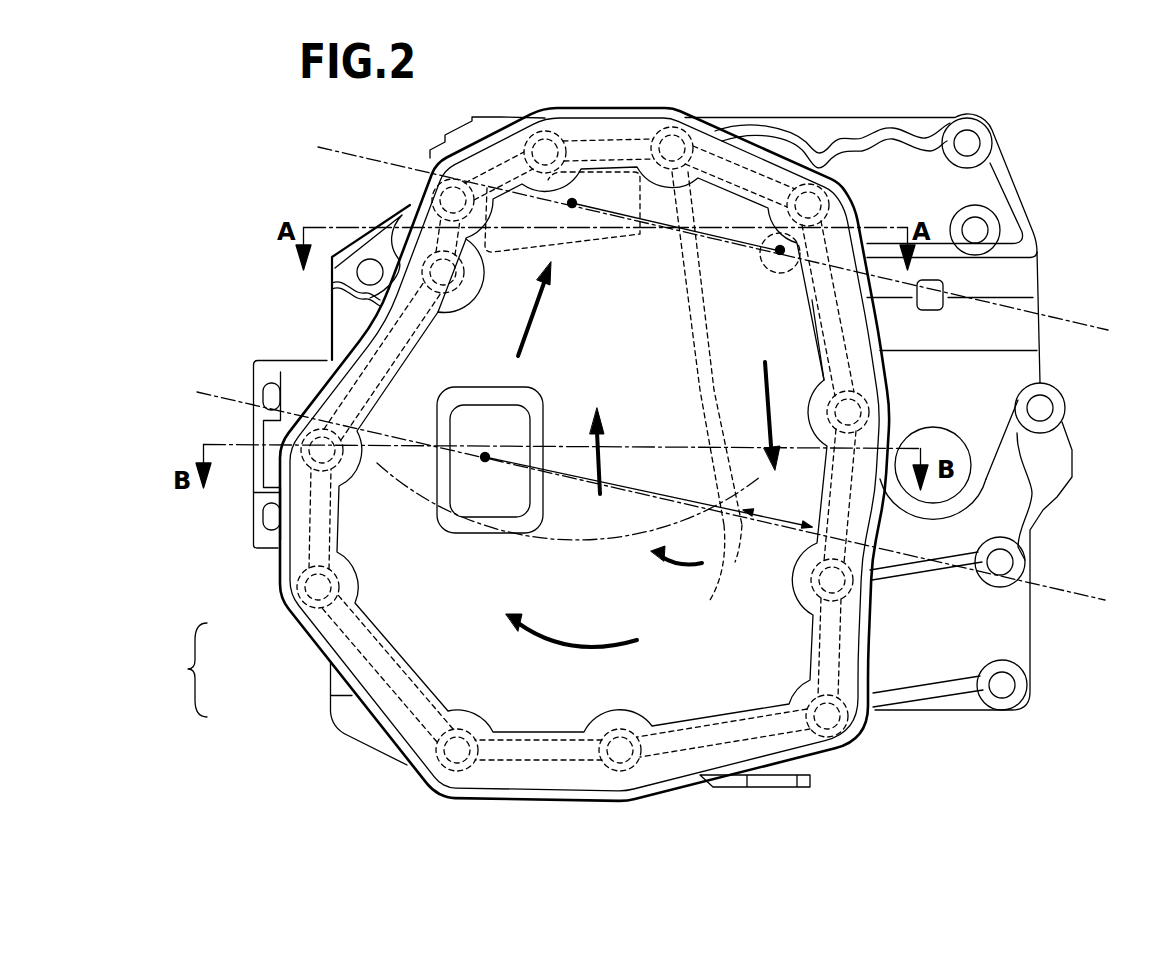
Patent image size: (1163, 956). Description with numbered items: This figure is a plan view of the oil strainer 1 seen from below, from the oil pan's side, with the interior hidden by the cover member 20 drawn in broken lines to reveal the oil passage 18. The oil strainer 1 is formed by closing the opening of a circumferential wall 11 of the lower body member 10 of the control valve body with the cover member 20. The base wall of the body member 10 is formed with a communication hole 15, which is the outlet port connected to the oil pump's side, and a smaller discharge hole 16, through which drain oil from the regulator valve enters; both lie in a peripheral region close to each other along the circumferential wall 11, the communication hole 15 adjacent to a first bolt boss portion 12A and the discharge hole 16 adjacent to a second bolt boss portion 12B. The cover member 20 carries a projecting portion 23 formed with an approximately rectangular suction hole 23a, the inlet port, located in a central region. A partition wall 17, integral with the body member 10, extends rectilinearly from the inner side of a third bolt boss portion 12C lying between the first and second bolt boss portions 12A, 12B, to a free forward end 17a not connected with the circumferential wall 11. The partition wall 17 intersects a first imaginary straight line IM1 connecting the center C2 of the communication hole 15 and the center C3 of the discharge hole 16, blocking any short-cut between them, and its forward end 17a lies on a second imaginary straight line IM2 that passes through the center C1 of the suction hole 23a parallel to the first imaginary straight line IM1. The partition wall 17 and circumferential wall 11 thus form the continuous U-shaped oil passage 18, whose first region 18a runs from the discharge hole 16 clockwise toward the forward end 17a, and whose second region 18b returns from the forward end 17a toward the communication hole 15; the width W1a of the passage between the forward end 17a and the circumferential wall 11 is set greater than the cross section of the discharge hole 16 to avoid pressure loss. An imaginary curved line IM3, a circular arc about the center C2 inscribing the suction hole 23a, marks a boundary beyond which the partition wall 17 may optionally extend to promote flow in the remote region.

The oil strainer 1 is at (187, 670).
The body member 10 is at (948, 719).
The circumferential wall 11 is at (347, 617).
The first bolt boss portion 12A is at (557, 135).
The second bolt boss portion 12B is at (820, 190).
The third bolt boss portion 12C is at (655, 132).
The communication hole 15 is at (612, 222).
The discharge hole 16 is at (787, 274).
The partition wall 17 is at (700, 408).
The forward end 17a is at (714, 578).
The oil passage 18 is at (707, 670).
The first region 18a is at (792, 372).
The second region 18b is at (485, 353).
The cover member 20 is at (303, 658).
The projecting portion 23 is at (300, 418).
The suction hole 23a is at (445, 483).
The center of suction hole C1 is at (485, 463).
The center of communication hole C2 is at (575, 208).
The center of discharge hole C3 is at (776, 254).
The first imaginary straight line IM1 is at (733, 243).
The second imaginary straight line IM2 is at (672, 503).
The imaginary curved line IM3 is at (590, 538).
The width of first region W1a is at (811, 531).